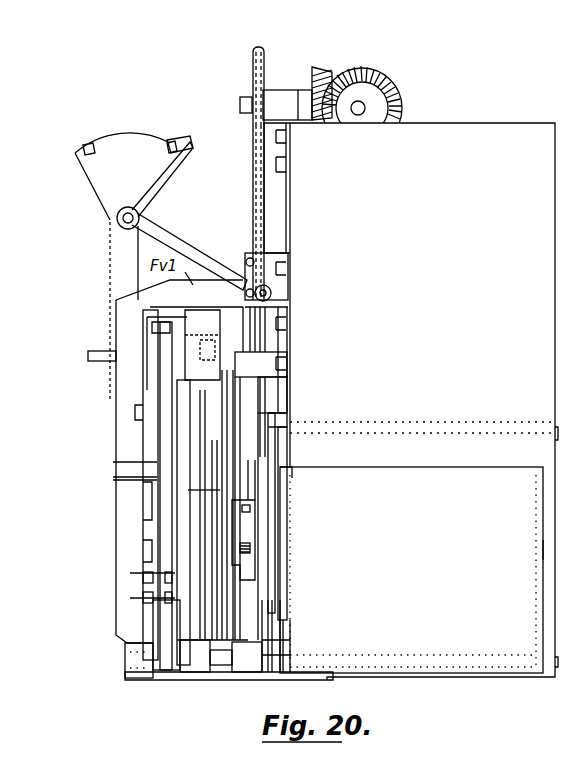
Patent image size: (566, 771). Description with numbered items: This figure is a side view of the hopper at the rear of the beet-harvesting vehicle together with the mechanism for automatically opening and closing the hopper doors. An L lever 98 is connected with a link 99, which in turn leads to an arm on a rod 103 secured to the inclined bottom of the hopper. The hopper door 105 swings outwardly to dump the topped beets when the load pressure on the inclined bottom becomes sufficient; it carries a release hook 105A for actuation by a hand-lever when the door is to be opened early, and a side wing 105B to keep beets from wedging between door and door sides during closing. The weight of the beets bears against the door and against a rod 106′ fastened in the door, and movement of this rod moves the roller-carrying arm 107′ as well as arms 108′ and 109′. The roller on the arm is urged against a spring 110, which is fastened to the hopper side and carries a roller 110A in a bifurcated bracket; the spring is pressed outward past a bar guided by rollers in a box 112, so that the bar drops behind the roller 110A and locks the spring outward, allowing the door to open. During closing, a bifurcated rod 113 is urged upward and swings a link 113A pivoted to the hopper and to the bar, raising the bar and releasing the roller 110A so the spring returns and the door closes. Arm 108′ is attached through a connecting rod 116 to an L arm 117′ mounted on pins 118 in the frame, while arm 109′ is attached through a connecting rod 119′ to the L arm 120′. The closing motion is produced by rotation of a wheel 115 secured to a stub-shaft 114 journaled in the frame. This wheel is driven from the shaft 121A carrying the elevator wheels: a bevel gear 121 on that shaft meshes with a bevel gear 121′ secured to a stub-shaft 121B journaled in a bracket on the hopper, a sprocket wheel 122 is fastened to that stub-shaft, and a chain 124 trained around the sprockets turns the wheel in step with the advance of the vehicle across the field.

The sprocket wheel 122 is at (252, 71).
The chain 124 is at (253, 183).
The bevel gear 121 is at (367, 83).
The shaft 121A is at (358, 115).
The stub-shaft 121B is at (288, 96).
The bevel gear 121′ is at (322, 80).
The L lever 98 is at (210, 127).
The link 99 is at (270, 302).
The spring 110 is at (248, 340).
The box 112 is at (247, 391).
The wheel 115 is at (202, 345).
The rod 103 is at (405, 440).
The L arm 120′ is at (165, 387).
The pin 118 is at (155, 405).
The L arm 117′ is at (180, 443).
The stub-shaft 114 is at (157, 463).
The connecting rod 119′ is at (147, 480).
The connecting rod 116 is at (185, 430).
The bifurcated rod 113 is at (220, 487).
The link 113A is at (287, 487).
The roller 110A is at (250, 532).
The hopper door 105 is at (432, 548).
The release hook 105A is at (288, 473).
The side wing 105B is at (536, 555).
The rod 106′ is at (270, 655).
The arm 107′ is at (243, 667).
The arm 108′ is at (195, 667).
The arm 109′ is at (162, 667).